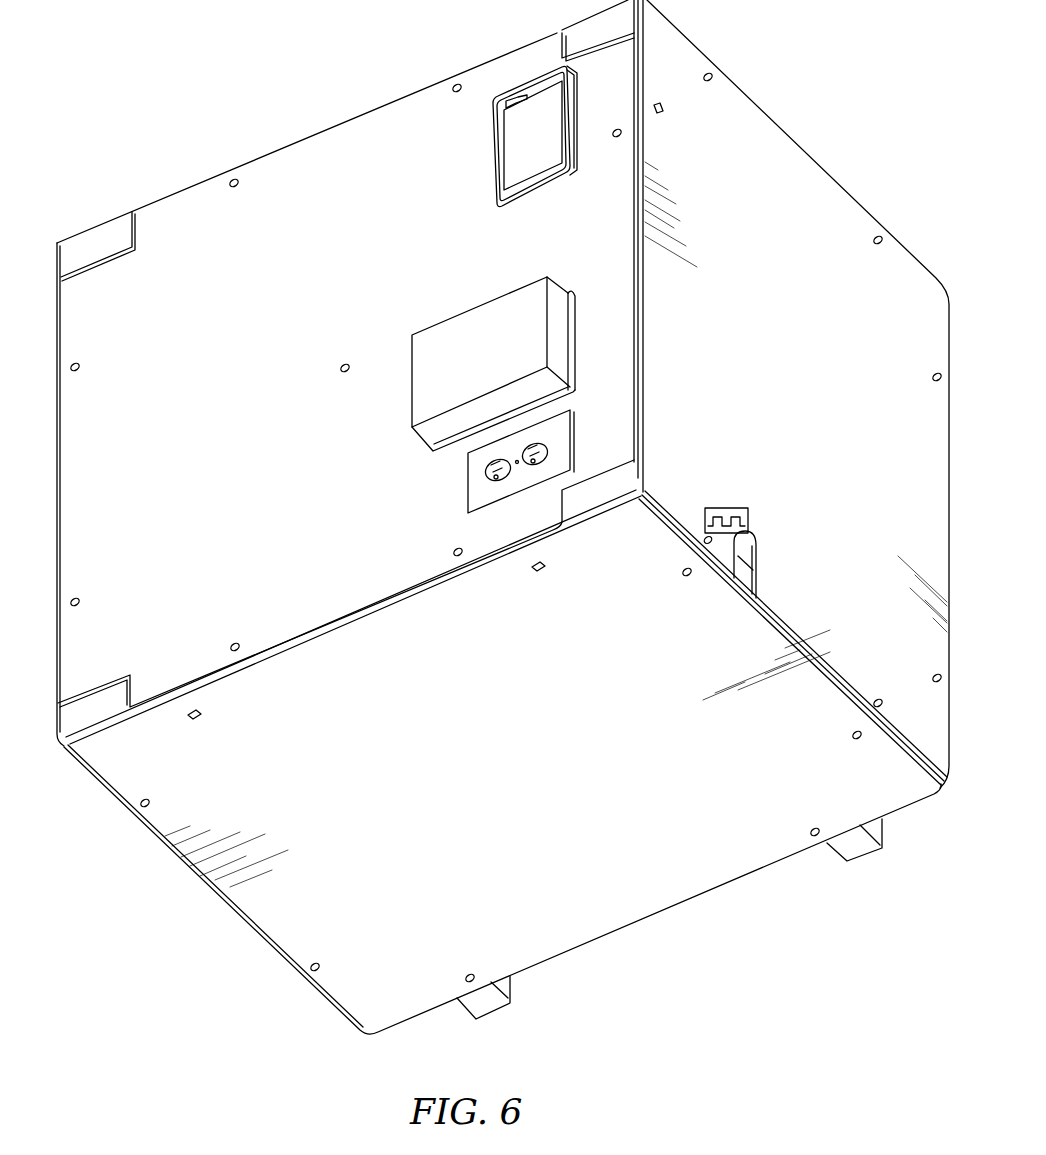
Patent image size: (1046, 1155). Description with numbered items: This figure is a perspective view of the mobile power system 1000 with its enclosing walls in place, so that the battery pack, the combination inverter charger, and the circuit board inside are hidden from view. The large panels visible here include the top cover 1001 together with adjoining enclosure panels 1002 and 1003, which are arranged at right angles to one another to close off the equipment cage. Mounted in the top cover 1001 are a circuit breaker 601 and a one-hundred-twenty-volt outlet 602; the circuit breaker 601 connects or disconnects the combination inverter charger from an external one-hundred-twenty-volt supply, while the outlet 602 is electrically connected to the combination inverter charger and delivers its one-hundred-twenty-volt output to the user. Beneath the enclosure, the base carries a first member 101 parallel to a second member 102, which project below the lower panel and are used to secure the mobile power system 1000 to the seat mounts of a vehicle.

The mobile power system 1000 is at (126, 61).
The top cover 1001 is at (254, 459).
The bottom panel 1002 is at (505, 779).
The second side panel 1003 is at (825, 366).
The circuit breaker 601 is at (425, 400).
The 120V outlet 602 is at (477, 488).
The first member 101 is at (488, 1010).
The second member 102 is at (856, 845).